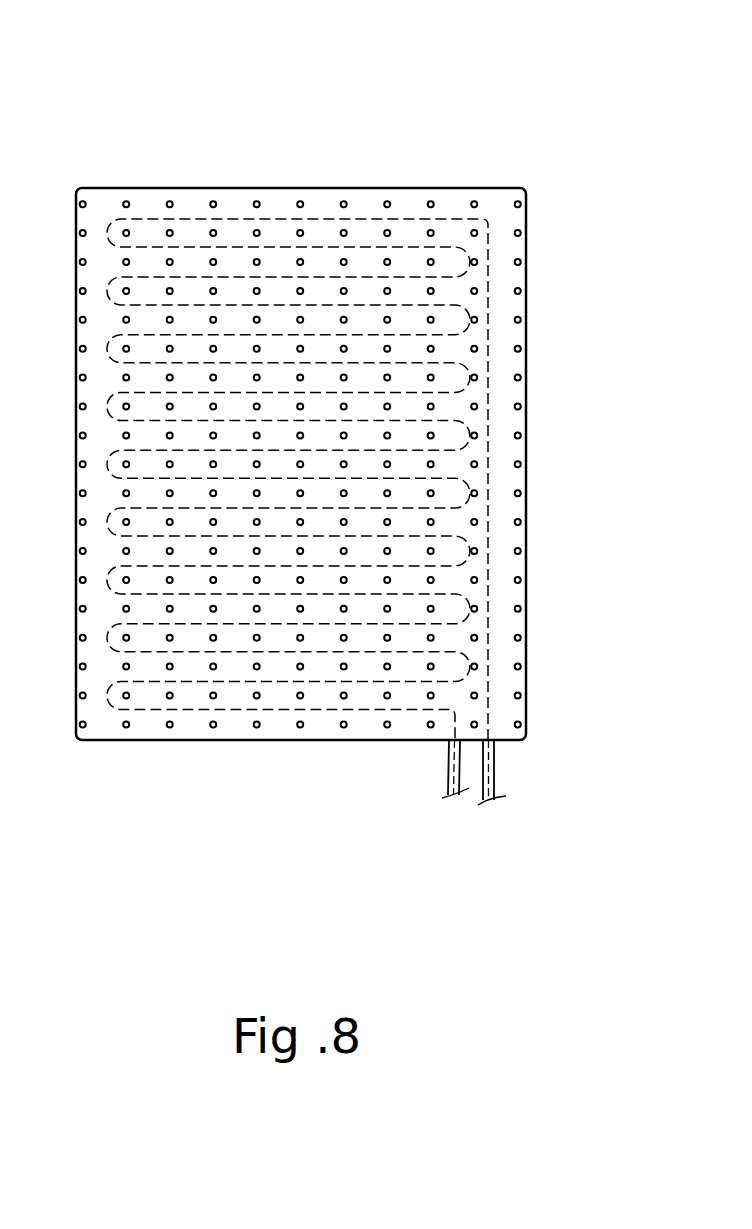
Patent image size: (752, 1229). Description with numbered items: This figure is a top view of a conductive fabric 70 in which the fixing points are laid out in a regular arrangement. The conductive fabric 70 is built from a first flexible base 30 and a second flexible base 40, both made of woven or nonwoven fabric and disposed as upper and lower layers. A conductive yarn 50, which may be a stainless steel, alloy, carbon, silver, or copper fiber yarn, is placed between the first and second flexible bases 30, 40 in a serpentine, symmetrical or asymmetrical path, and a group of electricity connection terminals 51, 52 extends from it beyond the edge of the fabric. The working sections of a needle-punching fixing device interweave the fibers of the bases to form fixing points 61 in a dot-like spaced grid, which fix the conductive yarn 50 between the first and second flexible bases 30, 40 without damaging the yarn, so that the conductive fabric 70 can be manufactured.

The conductive fabric 70 is at (160, 108).
The first flexible base 30 is at (301, 413).
The second flexible base 40 is at (455, 187).
The conductive yarn 50 is at (364, 219).
The electricity connection terminal 51 is at (495, 773).
The electricity connection terminal 52 is at (448, 771).
The fixing points 61 is at (170, 233).